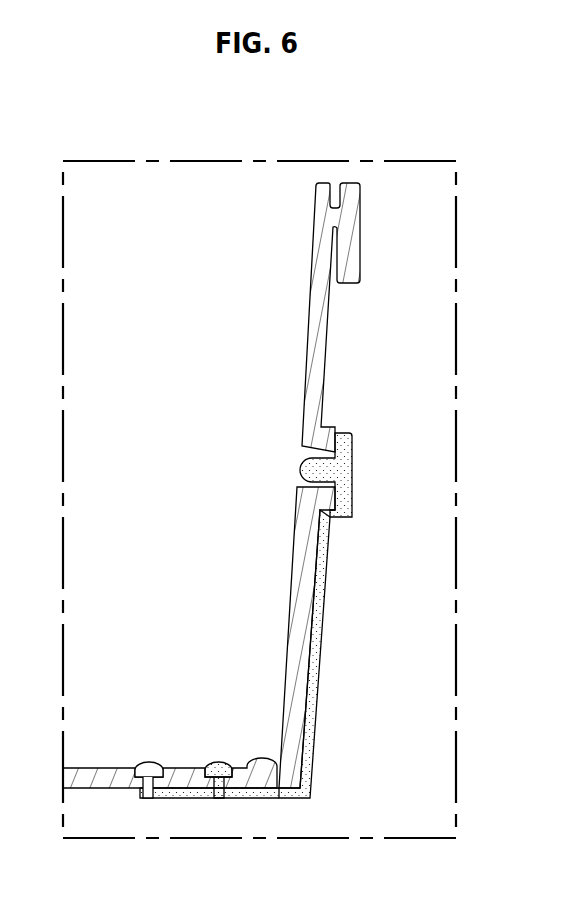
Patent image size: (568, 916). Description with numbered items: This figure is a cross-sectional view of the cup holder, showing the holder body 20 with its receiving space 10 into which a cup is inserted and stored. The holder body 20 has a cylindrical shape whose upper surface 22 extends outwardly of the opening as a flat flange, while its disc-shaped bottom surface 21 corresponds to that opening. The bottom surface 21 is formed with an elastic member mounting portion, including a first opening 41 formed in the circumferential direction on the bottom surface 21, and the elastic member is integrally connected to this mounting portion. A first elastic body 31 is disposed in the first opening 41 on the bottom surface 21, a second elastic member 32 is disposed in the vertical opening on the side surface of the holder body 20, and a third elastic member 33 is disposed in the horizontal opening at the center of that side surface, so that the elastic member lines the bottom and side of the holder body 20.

The receiving space 10 is at (180, 484).
The holder body 20 is at (297, 608).
The bottom surface 21 is at (299, 717).
The upper surface 22 is at (348, 192).
The first elastic body 31 is at (152, 768).
The second elastic member 32 is at (313, 658).
The third elastic member 33 is at (352, 470).
The first opening 41 is at (150, 798).